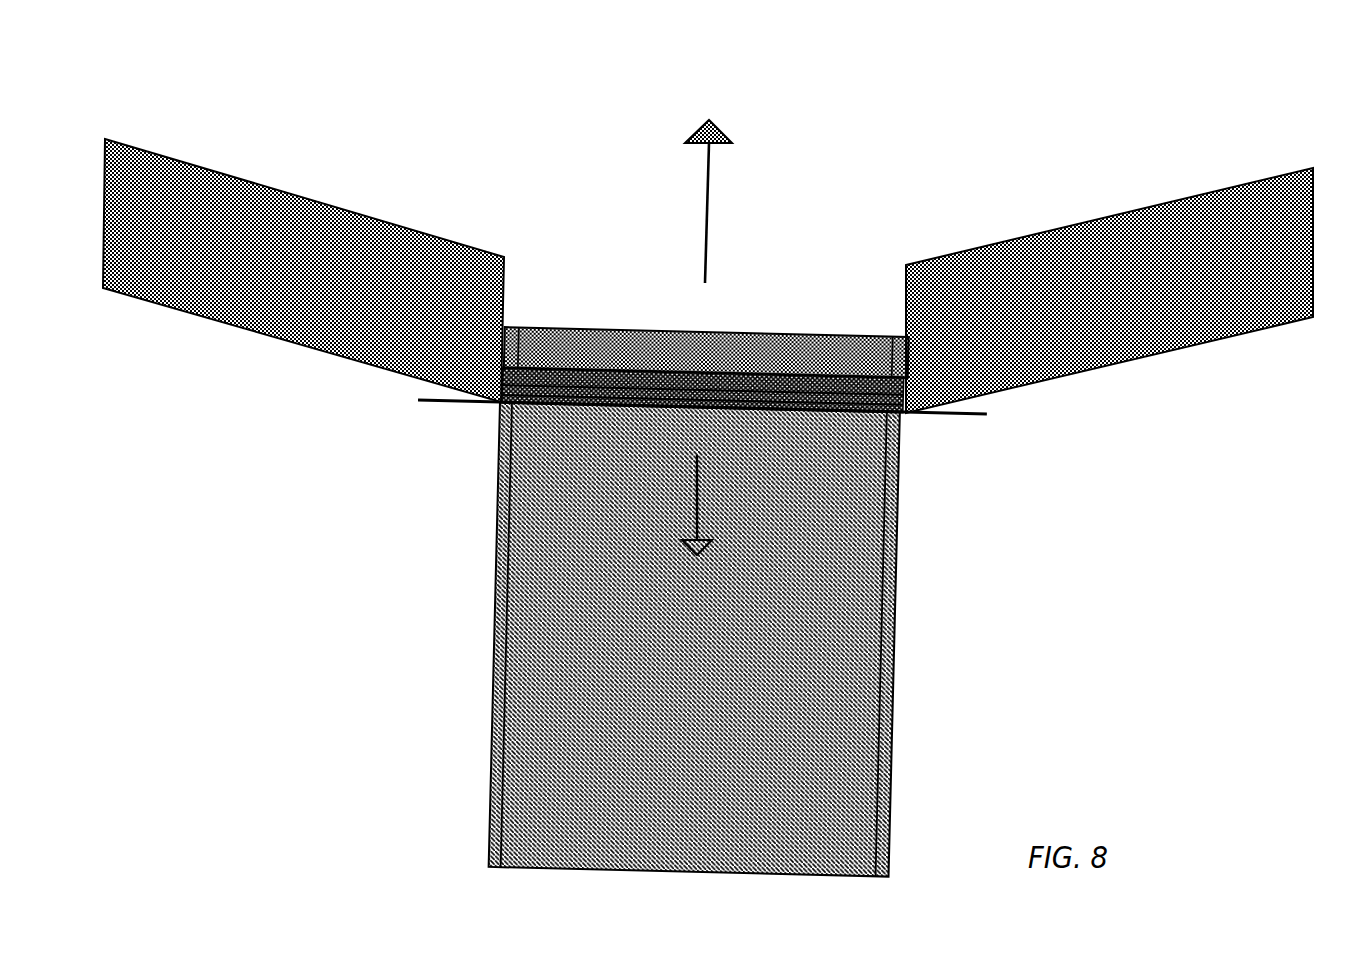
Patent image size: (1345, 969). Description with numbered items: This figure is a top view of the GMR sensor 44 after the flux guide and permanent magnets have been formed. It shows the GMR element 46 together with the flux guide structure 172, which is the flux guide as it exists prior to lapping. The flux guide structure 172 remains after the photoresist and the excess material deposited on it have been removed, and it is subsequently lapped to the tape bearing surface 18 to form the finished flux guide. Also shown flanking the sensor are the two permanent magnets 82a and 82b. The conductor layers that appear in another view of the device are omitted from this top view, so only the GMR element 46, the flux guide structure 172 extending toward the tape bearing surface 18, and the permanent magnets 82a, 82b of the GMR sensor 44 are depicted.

The GMR sensor 44 is at (987, 52).
The permanent magnet 82a is at (408, 237).
The permanent magnet 82b is at (1088, 222).
The GMR element 46 is at (757, 330).
The tape bearing surface 18 is at (447, 406).
The flux guide structure 172 is at (905, 412).